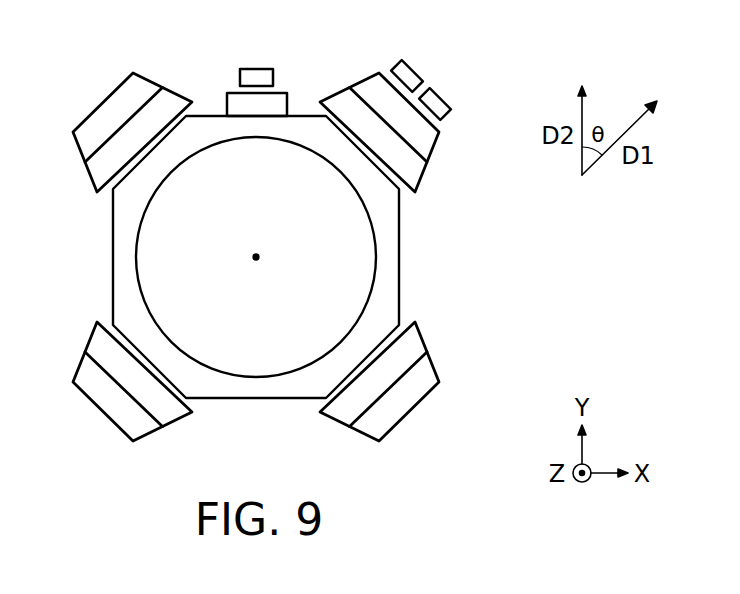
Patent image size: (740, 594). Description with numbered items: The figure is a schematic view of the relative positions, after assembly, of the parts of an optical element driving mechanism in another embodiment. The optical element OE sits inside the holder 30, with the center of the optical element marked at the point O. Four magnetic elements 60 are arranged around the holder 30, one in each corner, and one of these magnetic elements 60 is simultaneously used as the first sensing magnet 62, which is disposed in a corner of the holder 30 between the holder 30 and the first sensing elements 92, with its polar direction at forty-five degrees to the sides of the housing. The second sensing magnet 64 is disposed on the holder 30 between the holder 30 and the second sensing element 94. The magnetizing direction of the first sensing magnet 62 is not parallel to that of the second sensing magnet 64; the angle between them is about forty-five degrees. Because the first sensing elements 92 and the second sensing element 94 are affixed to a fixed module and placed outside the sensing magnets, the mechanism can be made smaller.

The holder 30 is at (308, 398).
The magnetic elements 60 is at (291, 257).
The first sensing magnet 62 is at (432, 163).
The second sensing magnet 64 is at (278, 100).
The first sensing elements 92 is at (435, 103).
The second sensing element 94 is at (255, 73).
The optical element OE is at (258, 377).
The optical axis center O is at (259, 257).